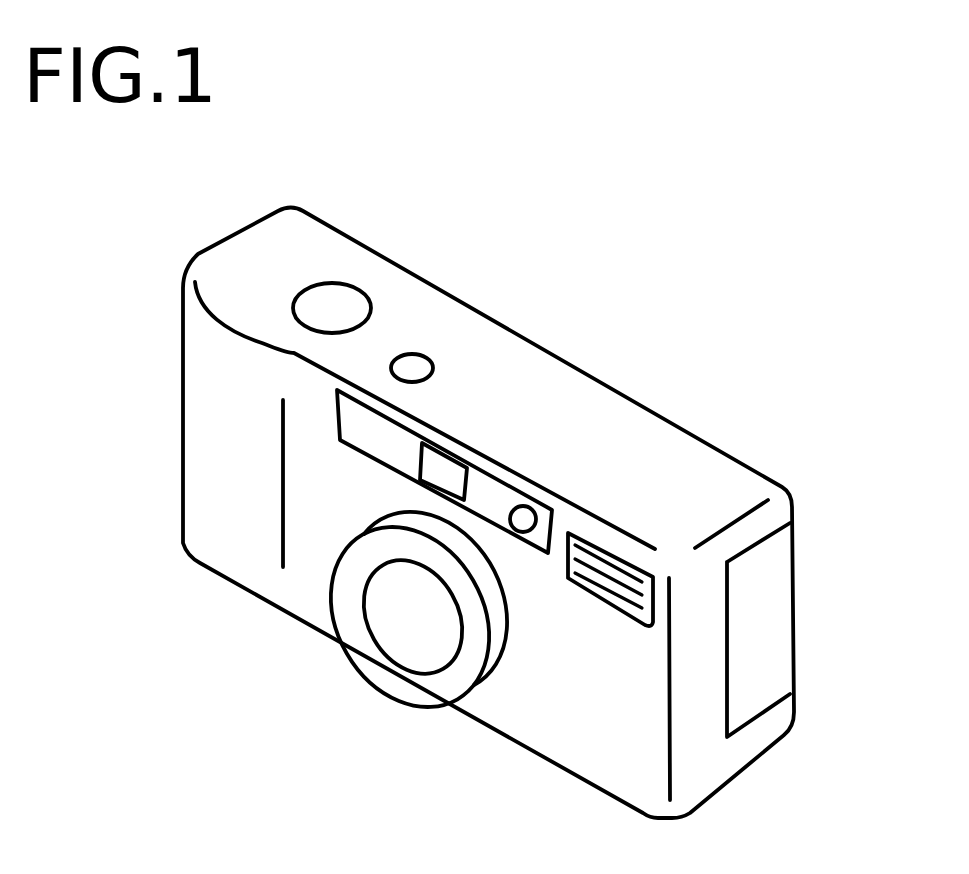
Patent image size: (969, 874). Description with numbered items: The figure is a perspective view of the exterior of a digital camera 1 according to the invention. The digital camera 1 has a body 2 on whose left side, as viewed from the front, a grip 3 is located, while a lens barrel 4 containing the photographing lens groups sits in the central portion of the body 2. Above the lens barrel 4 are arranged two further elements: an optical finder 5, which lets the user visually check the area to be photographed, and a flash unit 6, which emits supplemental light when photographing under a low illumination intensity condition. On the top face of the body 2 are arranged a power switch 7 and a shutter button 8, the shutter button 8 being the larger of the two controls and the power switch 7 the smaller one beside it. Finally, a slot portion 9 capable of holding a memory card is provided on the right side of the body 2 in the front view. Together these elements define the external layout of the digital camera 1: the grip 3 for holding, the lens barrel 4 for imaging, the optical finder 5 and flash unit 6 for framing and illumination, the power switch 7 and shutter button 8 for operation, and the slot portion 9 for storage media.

The digital camera 1 is at (557, 253).
The body 2 is at (634, 400).
The grip 3 is at (200, 385).
The lens barrel 4 is at (353, 648).
The optical finder 5 is at (360, 451).
The flash unit 6 is at (597, 606).
The power switch 7 is at (425, 356).
The shutter button 8 is at (332, 284).
The slot portion 9 is at (768, 600).